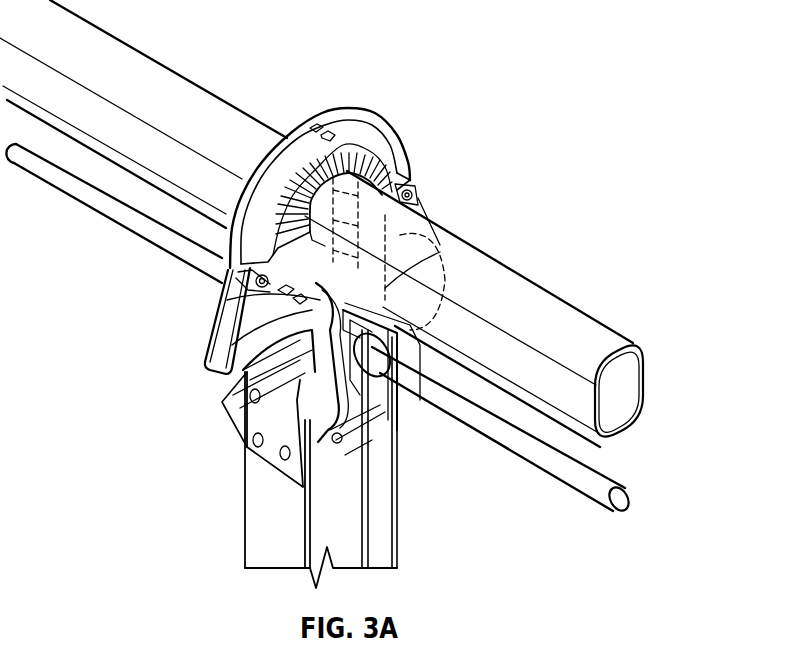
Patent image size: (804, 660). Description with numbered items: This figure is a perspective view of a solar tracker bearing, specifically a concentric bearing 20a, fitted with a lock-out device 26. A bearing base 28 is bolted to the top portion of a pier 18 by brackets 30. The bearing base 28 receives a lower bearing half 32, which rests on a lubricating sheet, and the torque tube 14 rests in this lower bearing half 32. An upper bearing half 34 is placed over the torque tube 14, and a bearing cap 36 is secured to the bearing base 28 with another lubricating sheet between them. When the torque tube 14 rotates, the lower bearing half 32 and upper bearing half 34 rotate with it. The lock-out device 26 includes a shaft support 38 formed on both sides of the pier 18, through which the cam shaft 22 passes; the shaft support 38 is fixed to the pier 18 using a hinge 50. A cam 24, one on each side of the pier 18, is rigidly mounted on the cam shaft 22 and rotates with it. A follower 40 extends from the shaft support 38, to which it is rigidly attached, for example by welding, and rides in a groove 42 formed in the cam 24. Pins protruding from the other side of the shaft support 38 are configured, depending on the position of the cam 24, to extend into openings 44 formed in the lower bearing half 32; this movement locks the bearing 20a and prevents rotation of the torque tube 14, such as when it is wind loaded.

The torque tube 14 is at (583, 309).
The pier 18 is at (245, 520).
The concentric bearing 20a is at (378, 137).
The cam shaft 22 is at (573, 484).
The cam 24 is at (383, 420).
The lock-out device 26 is at (220, 370).
The bearing base 28 is at (212, 342).
The brackets 30 is at (222, 402).
The lower bearing half 32 is at (247, 318).
The upper bearing half 34 is at (396, 174).
The bearing cap 36 is at (411, 176).
The shaft support 38 is at (233, 395).
The follower 40 is at (440, 252).
The groove 42 is at (247, 447).
The openings 44 is at (222, 278).
The hinge 50 is at (390, 407).